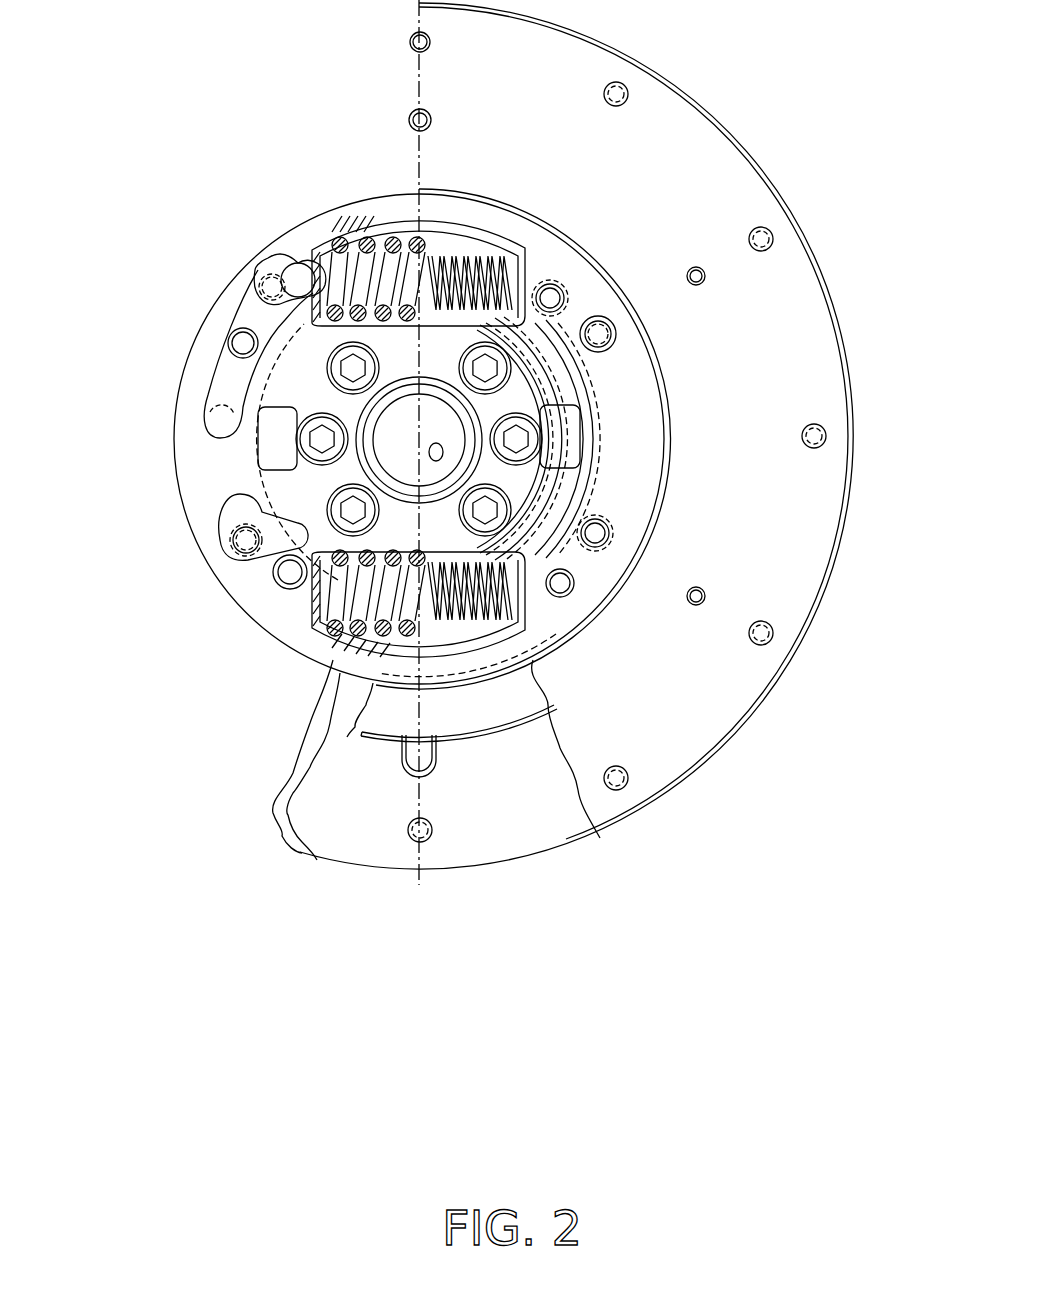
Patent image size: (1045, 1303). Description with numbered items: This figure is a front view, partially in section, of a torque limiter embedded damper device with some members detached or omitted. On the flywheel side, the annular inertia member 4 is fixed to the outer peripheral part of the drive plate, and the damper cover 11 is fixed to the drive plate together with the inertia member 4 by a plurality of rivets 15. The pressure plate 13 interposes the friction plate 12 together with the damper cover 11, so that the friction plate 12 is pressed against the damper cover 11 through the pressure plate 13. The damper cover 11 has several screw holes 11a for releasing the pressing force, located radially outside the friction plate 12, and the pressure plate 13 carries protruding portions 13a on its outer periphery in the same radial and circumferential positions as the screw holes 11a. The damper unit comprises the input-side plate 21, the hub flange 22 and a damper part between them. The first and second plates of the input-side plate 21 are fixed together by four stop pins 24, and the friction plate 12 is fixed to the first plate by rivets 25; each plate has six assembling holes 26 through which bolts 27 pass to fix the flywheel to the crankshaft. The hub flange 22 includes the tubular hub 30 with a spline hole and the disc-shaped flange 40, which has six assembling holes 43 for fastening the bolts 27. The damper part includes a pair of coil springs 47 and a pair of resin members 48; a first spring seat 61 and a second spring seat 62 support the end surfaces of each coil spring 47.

The inertia member 4 is at (523, 833).
The damper cover 11 is at (806, 294).
The screw hole 11a is at (706, 270).
The friction plate 12 is at (520, 703).
The pressure plate 13 is at (393, 650).
The protruding portion 13a is at (425, 772).
The rivet 15 is at (620, 86).
The input-side plate 21 is at (638, 402).
The hub flange 22 is at (182, 522).
The stop pin 24 is at (238, 338).
The rivet 25 is at (258, 273).
The assembling hole 26 is at (505, 350).
The bolt 27 is at (308, 458).
The hub 30 is at (326, 655).
The flange 40 is at (196, 393).
The assembling hole 43 is at (282, 272).
The coil spring 47 is at (392, 236).
The resin member 48 is at (268, 448).
The first spring seat 61 is at (340, 228).
The second spring seat 62 is at (345, 705).